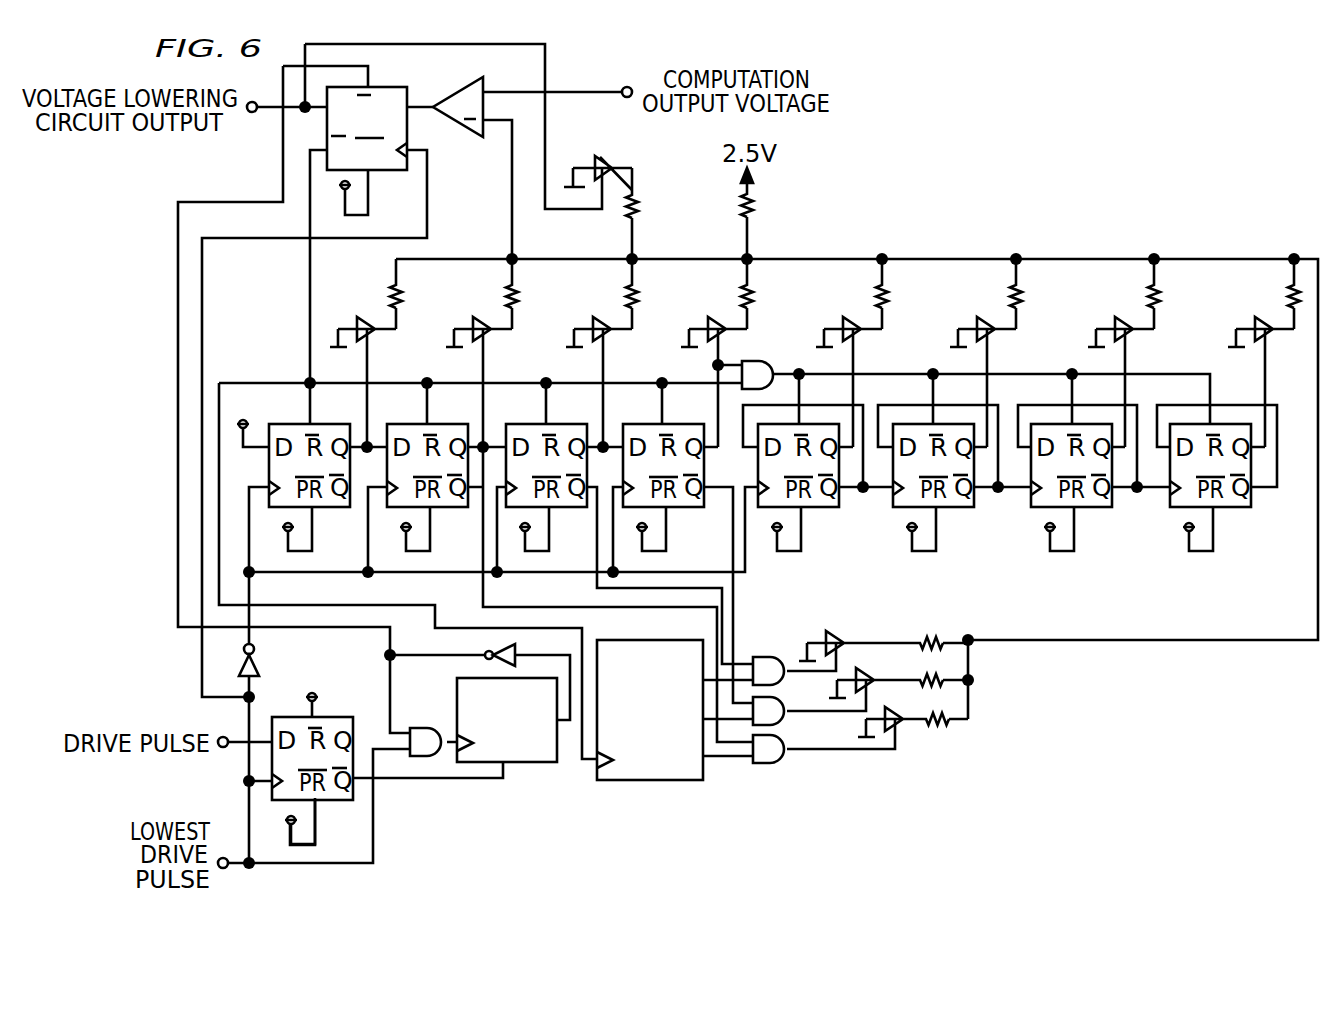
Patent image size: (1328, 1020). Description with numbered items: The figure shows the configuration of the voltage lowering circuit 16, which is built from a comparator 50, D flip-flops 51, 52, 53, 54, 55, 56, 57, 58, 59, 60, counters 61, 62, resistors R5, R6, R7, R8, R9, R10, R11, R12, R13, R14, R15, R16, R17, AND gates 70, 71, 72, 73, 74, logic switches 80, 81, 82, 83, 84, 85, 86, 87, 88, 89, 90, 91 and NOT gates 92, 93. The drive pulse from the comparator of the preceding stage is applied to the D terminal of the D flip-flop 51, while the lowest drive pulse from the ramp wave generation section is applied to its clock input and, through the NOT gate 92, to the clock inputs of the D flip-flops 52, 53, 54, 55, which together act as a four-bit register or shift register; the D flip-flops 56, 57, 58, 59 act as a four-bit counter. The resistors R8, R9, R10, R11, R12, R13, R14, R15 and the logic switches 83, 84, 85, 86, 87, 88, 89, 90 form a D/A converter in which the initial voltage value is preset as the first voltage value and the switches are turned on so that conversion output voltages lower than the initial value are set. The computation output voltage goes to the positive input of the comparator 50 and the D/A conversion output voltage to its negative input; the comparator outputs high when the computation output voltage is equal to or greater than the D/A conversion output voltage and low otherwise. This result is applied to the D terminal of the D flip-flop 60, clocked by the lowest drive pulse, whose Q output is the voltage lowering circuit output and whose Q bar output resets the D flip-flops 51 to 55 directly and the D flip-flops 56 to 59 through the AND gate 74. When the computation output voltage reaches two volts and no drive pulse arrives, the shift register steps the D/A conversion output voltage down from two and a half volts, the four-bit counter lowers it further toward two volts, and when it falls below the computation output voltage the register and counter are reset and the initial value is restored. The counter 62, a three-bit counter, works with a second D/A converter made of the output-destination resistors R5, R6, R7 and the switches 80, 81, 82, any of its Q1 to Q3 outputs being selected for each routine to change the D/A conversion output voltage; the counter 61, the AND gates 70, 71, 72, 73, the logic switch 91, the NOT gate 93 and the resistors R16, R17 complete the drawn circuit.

The voltage lowering circuit 16 is at (917, 177).
The comparator 50 is at (460, 136).
The D flip-flop 51 is at (340, 717).
The D flip-flop 52 is at (328, 424).
The D flip-flop 53 is at (445, 424).
The D flip-flop 54 is at (565, 424).
The D flip-flop 55 is at (680, 424).
The D flip-flop 56 is at (812, 508).
The D flip-flop 57 is at (949, 508).
The D flip-flop 58 is at (1091, 508).
The D flip-flop 59 is at (1229, 508).
The D flip-flop 60 is at (385, 172).
The counter 61 is at (523, 762).
The counter 62 is at (613, 780).
The AND gate 70 is at (415, 728).
The AND gate 71 is at (768, 763).
The AND gate 72 is at (782, 722).
The AND gate 73 is at (762, 657).
The AND gate 74 is at (768, 362).
The logic switch 80 is at (834, 632).
The logic switch 81 is at (866, 670).
The logic switch 82 is at (897, 720).
The logic switch 83 is at (374, 337).
The logic switch 84 is at (490, 337).
The logic switch 85 is at (610, 337).
The logic switch 86 is at (726, 334).
The logic switch 87 is at (860, 337).
The logic switch 88 is at (994, 337).
The logic switch 89 is at (1132, 337).
The logic switch 90 is at (1272, 337).
The logic switch 91 is at (606, 160).
The NOT gate 92 is at (260, 668).
The NOT gate 93 is at (518, 650).
The resistor R5 is at (932, 625).
The resistor R6 is at (918, 667).
The resistor R7 is at (934, 736).
The resistor R8 is at (412, 296).
The resistor R9 is at (528, 296).
The resistor R10 is at (656, 296).
The resistor R11 is at (770, 296).
The resistor R12 is at (906, 296).
The resistor R13 is at (1040, 296).
The resistor R14 is at (1178, 296).
The resistor R15 is at (1271, 296).
The resistor R16 is at (656, 208).
The resistor R17 is at (771, 195).